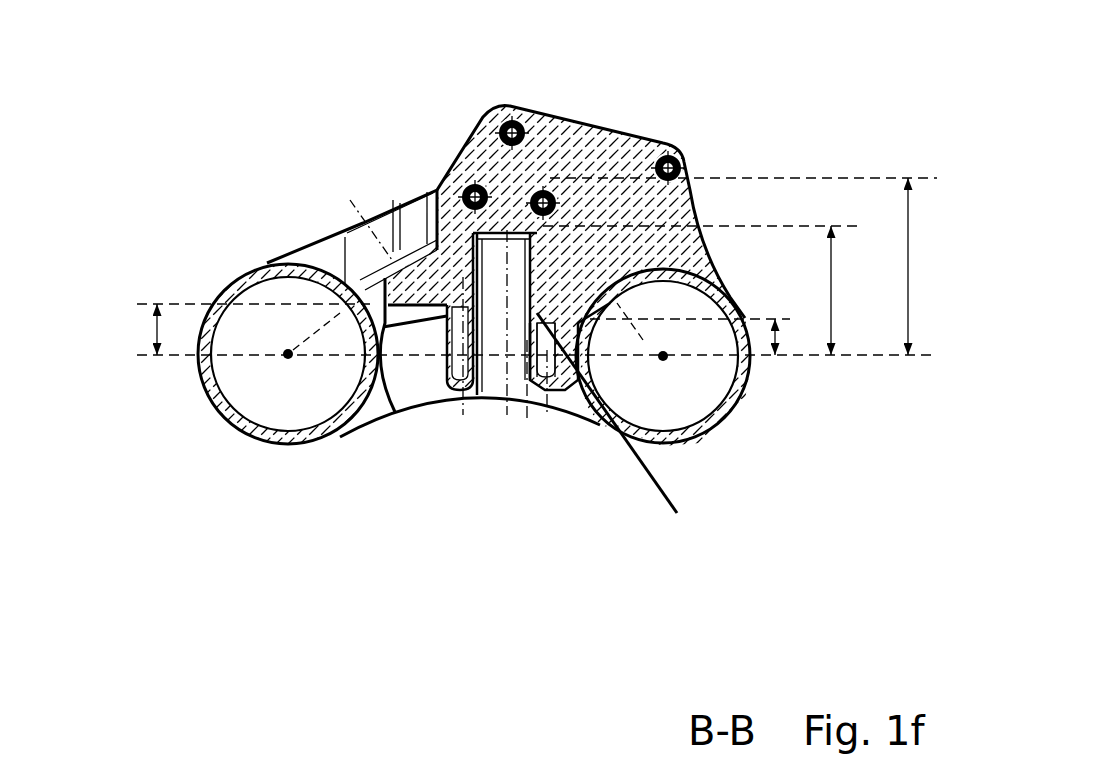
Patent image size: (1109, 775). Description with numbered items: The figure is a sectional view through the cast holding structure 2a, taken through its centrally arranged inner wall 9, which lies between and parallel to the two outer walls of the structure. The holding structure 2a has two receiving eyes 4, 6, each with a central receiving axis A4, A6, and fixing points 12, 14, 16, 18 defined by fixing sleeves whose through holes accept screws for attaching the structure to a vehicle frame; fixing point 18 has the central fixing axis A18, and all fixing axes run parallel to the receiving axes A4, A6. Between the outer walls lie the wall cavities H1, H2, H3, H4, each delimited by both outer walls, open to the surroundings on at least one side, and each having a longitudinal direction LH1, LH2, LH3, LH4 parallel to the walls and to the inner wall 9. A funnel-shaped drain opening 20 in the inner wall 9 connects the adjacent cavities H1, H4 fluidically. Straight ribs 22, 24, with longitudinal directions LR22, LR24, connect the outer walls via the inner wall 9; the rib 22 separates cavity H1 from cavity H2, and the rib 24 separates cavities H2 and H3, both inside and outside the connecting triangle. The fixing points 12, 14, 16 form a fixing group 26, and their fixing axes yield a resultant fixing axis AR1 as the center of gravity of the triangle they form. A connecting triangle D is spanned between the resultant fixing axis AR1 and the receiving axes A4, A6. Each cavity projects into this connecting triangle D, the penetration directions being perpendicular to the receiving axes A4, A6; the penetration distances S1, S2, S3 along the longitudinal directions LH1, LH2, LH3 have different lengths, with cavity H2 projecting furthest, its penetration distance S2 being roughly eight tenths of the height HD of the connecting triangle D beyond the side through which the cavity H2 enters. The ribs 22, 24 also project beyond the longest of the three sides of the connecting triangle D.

The holding structure 2a is at (258, 264).
The receiving eye 4 is at (273, 440).
The receiving axis A4 is at (288, 356).
The receiving eye 6 is at (687, 440).
The receiving axis A6 is at (663, 357).
The inner wall 9 is at (605, 140).
The fixing point 12 is at (463, 185).
The fixing point 14 is at (495, 118).
The fixing point 16 is at (650, 143).
The fixing point 18 is at (683, 150).
The fixing axis A18 is at (690, 158).
The resultant fixing axis AR1 is at (537, 313).
The cavity H4 is at (440, 198).
The longitudinal direction LH4 is at (360, 216).
The longitudinal direction LR22 is at (467, 293).
The drain opening 20 is at (365, 292).
The rib 22 is at (495, 415).
The rib 24 is at (512, 400).
The longitudinal direction LR24 is at (563, 397).
The fixing group 26 is at (625, 437).
The cavity H1 is at (413, 332).
The cavity H2 is at (530, 337).
The cavity H3 is at (585, 343).
The connecting triangle D is at (418, 418).
The longitudinal direction LH1 is at (420, 418).
The longitudinal direction LH2 is at (500, 405).
The longitudinal direction LH3 is at (563, 415).
The penetration distance S1 is at (157, 331).
The penetration distance S2 is at (870, 277).
The penetration distance S3 is at (780, 332).
The height of the connecting triangle HD is at (910, 270).